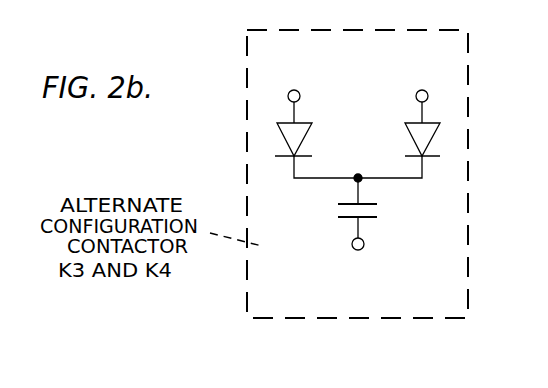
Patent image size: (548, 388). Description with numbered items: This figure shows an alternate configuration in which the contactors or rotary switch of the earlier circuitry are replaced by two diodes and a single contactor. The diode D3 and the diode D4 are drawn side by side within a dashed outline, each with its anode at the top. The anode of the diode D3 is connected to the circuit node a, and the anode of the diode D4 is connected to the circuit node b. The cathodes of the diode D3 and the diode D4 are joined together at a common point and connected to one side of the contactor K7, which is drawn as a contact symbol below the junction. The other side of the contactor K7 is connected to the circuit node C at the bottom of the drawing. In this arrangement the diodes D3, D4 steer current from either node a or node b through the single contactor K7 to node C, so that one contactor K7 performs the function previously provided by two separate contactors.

The diode D3 is at (306, 135).
The diode D4 is at (411, 140).
The contactor K7 is at (352, 220).
The circuit node a is at (294, 71).
The circuit node b is at (422, 71).
The circuit node C is at (358, 272).